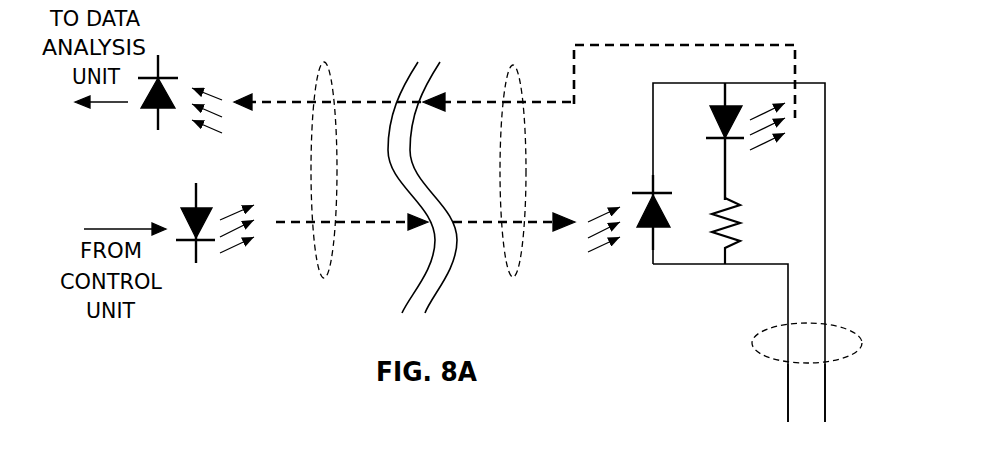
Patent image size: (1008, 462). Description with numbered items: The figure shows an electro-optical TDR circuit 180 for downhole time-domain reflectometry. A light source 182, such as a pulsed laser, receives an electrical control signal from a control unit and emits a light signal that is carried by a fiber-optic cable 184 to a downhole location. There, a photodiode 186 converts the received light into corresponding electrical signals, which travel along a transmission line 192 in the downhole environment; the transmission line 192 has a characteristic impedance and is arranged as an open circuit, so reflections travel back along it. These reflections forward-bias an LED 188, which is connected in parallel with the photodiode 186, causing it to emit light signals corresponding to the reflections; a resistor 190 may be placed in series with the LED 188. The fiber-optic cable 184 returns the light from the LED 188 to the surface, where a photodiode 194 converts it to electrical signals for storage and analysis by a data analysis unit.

The electro-optical TDR circuit 180 is at (266, 365).
The light source 182 is at (185, 208).
The fiber-optic cable 184 is at (326, 62).
The photodiode 186 is at (642, 228).
The LED 188 is at (713, 108).
The resistor 190 is at (738, 199).
The transmission line 192 is at (752, 343).
The photodiode 194 is at (145, 110).